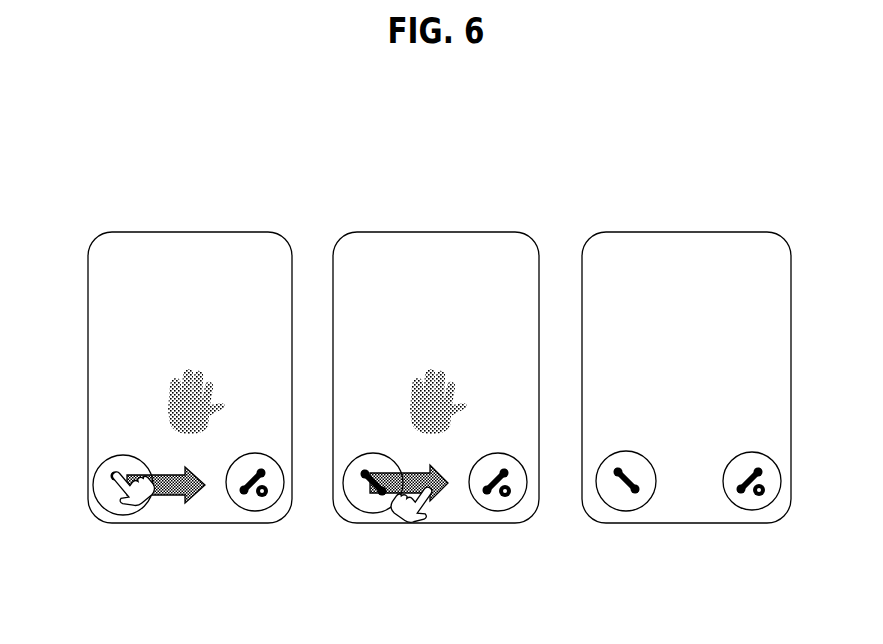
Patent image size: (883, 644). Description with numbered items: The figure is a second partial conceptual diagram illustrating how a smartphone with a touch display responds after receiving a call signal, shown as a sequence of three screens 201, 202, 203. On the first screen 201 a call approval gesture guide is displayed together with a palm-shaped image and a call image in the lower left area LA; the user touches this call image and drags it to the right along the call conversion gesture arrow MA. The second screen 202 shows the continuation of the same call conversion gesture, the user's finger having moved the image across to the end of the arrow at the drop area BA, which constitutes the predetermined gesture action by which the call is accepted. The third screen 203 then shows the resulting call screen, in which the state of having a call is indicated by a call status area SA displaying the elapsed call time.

The first screen of electronic device showing call approval gesture guide 201 is at (159, 414).
The second screen of electronic device showing call approval gesture guide 202 is at (436, 418).
The third screen of electronic device showing call screen 203 is at (730, 364).
The call accept (lift) button area LA is at (108, 516).
The call conversion gesture MA is at (148, 500).
The call conversion gesture BA is at (441, 500).
The call status (timer) area SA is at (728, 320).